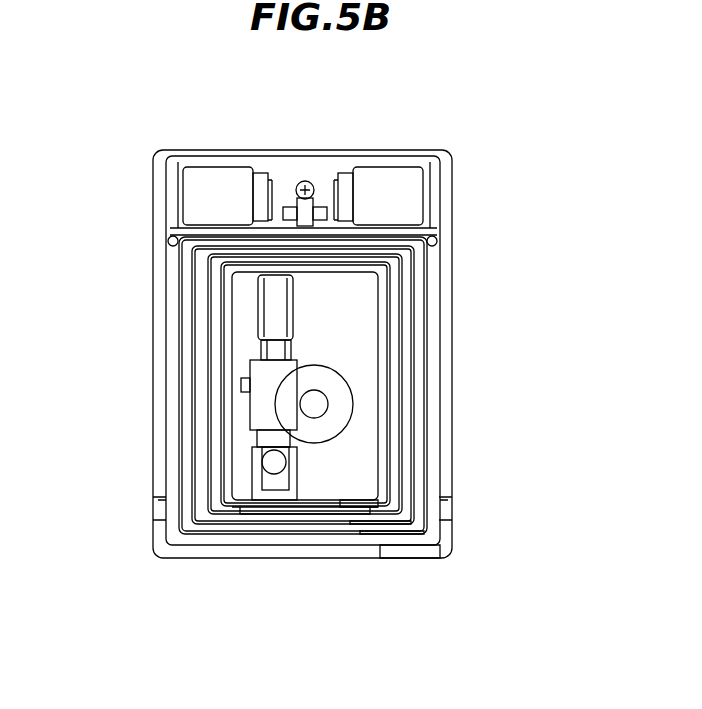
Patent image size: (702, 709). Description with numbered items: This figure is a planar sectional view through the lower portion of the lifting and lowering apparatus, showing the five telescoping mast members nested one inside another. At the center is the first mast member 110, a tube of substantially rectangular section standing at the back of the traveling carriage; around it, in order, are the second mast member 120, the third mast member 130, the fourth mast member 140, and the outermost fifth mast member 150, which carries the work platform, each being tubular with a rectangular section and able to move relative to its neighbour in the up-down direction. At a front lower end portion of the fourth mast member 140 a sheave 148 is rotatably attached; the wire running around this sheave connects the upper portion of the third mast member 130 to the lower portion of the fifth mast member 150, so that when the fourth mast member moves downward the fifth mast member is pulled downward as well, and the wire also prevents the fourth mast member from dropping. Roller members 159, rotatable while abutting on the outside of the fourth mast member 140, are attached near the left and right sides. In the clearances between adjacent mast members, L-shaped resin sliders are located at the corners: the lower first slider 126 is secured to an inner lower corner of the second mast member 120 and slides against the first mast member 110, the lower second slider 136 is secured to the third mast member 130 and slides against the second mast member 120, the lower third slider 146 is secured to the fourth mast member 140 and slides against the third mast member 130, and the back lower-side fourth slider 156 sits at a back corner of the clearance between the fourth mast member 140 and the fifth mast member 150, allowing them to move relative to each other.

The first mast member 110 is at (384, 445).
The second mast member 120 is at (401, 410).
The third mast member 130 is at (413, 398).
The fourth mast member 140 is at (425, 376).
The fifth mast member 150 is at (438, 345).
The sheave 148 is at (306, 182).
The roller member 159 is at (218, 183).
The lower first slider 126 is at (358, 507).
The lower second slider 136 is at (363, 525).
The lower third slider 146 is at (382, 533).
The back lower-side fourth slider 156 is at (395, 550).